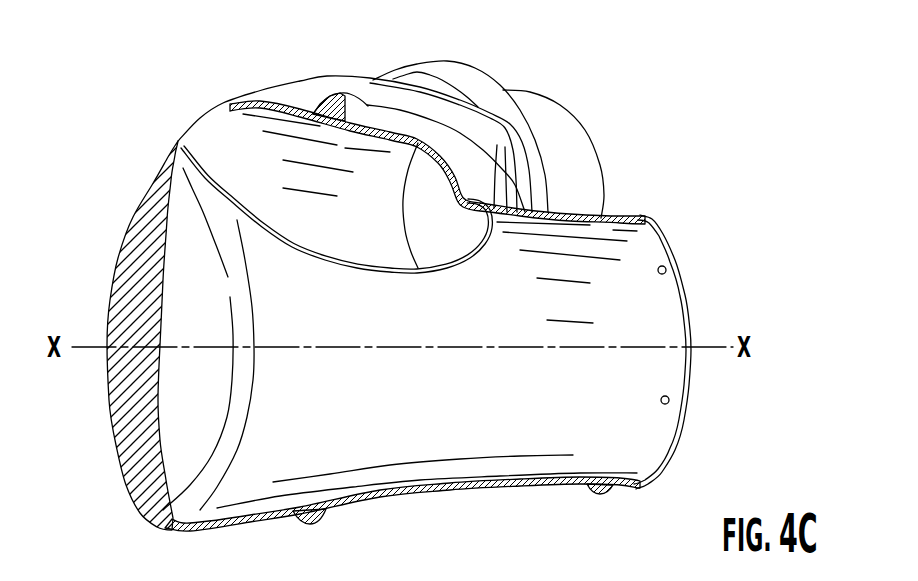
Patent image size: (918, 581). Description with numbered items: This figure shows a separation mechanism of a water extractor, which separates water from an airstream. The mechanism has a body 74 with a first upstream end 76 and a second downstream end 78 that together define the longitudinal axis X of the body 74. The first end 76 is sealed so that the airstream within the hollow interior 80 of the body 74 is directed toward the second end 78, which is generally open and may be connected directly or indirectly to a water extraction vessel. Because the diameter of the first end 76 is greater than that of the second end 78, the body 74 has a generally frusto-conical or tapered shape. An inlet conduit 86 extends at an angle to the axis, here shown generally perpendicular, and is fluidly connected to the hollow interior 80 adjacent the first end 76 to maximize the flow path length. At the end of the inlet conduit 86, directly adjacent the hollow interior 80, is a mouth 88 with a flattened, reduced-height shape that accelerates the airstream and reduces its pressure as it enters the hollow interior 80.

The body 74 is at (438, 492).
The first upstream end 76 is at (173, 320).
The second downstream end 78 is at (693, 343).
The hollow interior 80 is at (530, 340).
The inlet conduit 86 is at (468, 97).
The mouth 88 is at (465, 192).